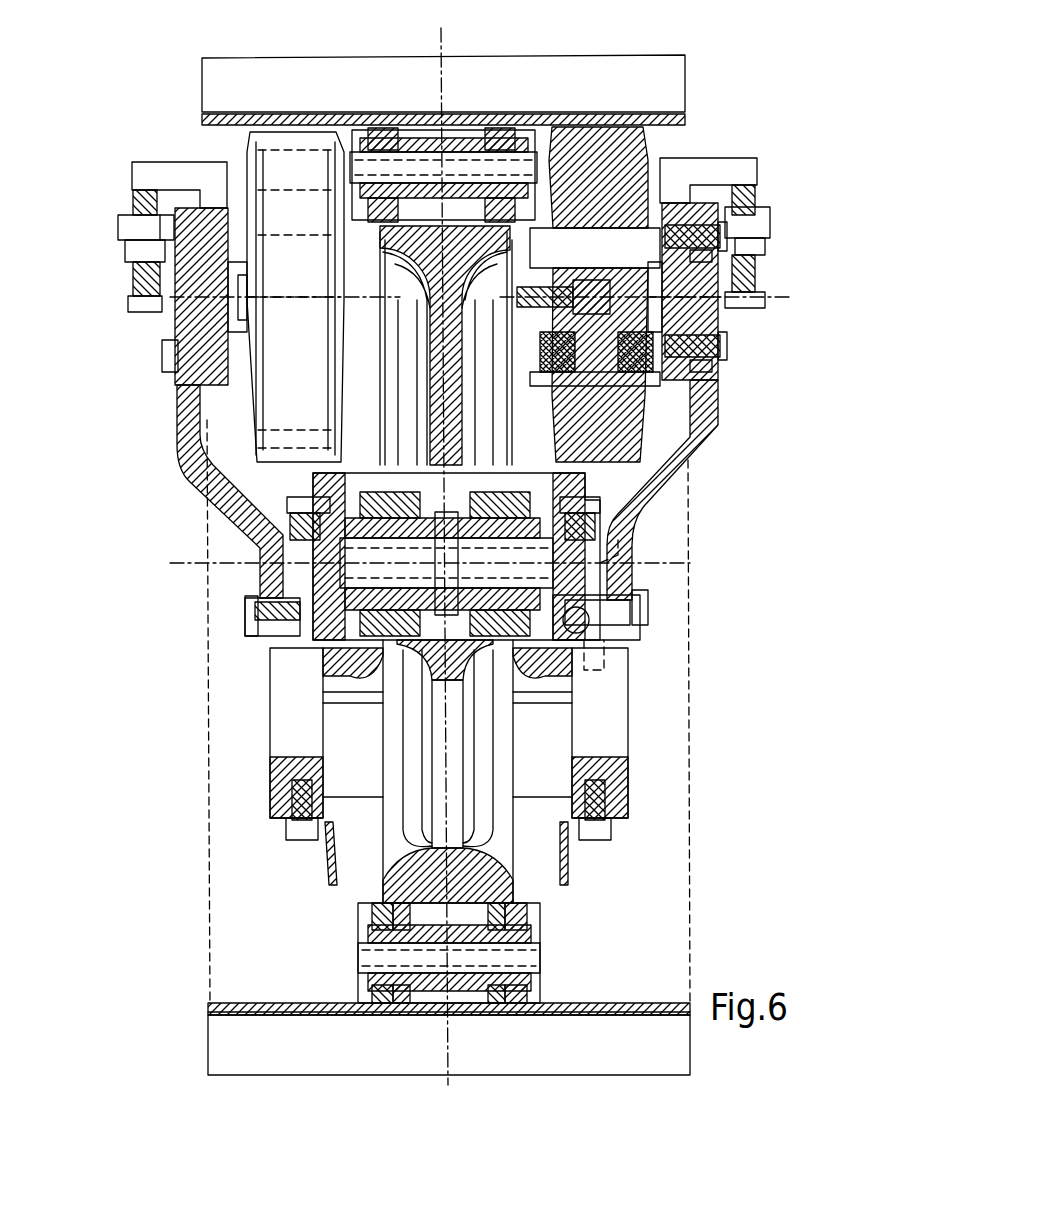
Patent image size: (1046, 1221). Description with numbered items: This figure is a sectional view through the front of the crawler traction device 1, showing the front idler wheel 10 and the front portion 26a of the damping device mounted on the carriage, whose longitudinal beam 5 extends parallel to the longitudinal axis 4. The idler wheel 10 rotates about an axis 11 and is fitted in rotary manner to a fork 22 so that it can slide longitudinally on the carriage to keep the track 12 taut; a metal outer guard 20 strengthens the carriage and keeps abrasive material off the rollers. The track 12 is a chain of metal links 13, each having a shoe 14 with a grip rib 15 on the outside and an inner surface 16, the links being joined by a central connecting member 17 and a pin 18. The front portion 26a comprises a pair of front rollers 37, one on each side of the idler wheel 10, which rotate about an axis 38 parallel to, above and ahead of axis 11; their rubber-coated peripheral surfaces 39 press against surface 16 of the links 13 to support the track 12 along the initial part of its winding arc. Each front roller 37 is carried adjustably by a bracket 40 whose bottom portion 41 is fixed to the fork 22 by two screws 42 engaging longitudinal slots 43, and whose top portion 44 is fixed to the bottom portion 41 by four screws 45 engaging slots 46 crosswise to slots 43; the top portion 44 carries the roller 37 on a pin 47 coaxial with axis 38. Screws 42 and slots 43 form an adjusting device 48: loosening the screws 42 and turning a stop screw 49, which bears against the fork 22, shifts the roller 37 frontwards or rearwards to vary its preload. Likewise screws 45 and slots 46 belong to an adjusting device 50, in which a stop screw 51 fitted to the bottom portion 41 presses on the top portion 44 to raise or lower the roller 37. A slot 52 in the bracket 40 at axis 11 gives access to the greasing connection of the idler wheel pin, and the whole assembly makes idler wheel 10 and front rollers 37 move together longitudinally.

The crawler traction device 1 is at (178, 85).
The longitudinal axis 4 is at (445, 90).
The longitudinal beam 5 is at (284, 741).
The front idler wheel 10 is at (383, 893).
The axis 11 is at (652, 562).
The track 12 is at (670, 755).
The link 13 is at (360, 990).
The shoe 14 is at (302, 1012).
The grip rib 15 is at (228, 1064).
The surface 16 is at (232, 126).
The central connecting member 17 is at (528, 912).
The pin 18 is at (522, 957).
The outer guard 20 is at (570, 862).
The fork 22 is at (323, 672).
The front portion 26a is at (690, 135).
The front roller 37 is at (272, 140).
The axis 38 is at (298, 340).
The rubber-coated peripheral surface 39 is at (560, 126).
The bracket 40 is at (172, 419).
The bottom portion 41 is at (205, 455).
The screw 42 is at (245, 600).
The longitudinal slot 43 is at (252, 632).
The top portion 44 is at (210, 190).
The screw 45 is at (713, 238).
The slot 46 is at (700, 258).
The pin 47 is at (600, 320).
The adjusting device 48 is at (250, 672).
The stop screw 49 is at (590, 635).
The adjusting device 50 is at (160, 333).
The stop screw 51 is at (138, 200).
The slot 52 is at (620, 548).